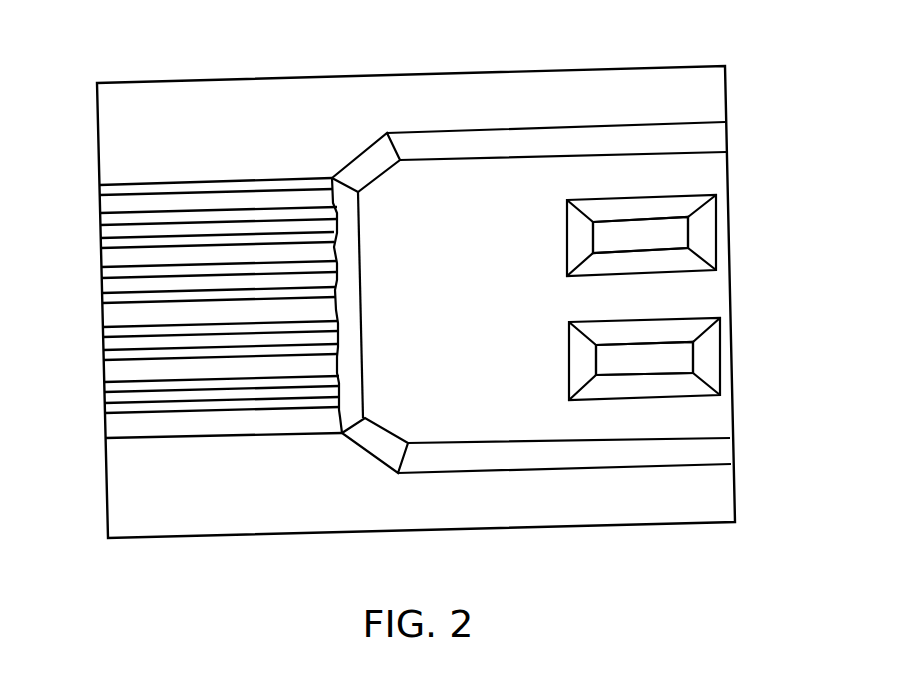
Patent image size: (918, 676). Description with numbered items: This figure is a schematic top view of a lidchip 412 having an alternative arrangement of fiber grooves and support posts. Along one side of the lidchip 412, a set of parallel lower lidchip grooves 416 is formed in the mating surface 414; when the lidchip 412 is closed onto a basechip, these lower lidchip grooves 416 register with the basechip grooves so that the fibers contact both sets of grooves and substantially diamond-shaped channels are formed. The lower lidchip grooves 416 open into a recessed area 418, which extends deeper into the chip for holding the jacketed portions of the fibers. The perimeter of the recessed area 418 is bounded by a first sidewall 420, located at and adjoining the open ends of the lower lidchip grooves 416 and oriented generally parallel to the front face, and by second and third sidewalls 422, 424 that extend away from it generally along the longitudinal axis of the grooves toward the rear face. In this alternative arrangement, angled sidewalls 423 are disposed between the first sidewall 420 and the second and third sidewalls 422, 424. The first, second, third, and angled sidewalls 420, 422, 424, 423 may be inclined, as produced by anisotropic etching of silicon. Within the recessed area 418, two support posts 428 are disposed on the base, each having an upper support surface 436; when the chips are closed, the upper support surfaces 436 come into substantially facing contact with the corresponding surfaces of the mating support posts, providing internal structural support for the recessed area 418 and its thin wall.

The lidchip 412 is at (563, 45).
The mating surface 414 is at (713, 85).
The lower lidchip groove 416 is at (108, 210).
The recessed area 418 is at (505, 317).
The first sidewall 420 is at (347, 262).
The second sidewall 422 is at (715, 136).
The angled sidewall 423 is at (368, 163).
The third sidewall 424 is at (723, 453).
The support post 428 is at (705, 230).
The upper support surface 436 is at (645, 237).